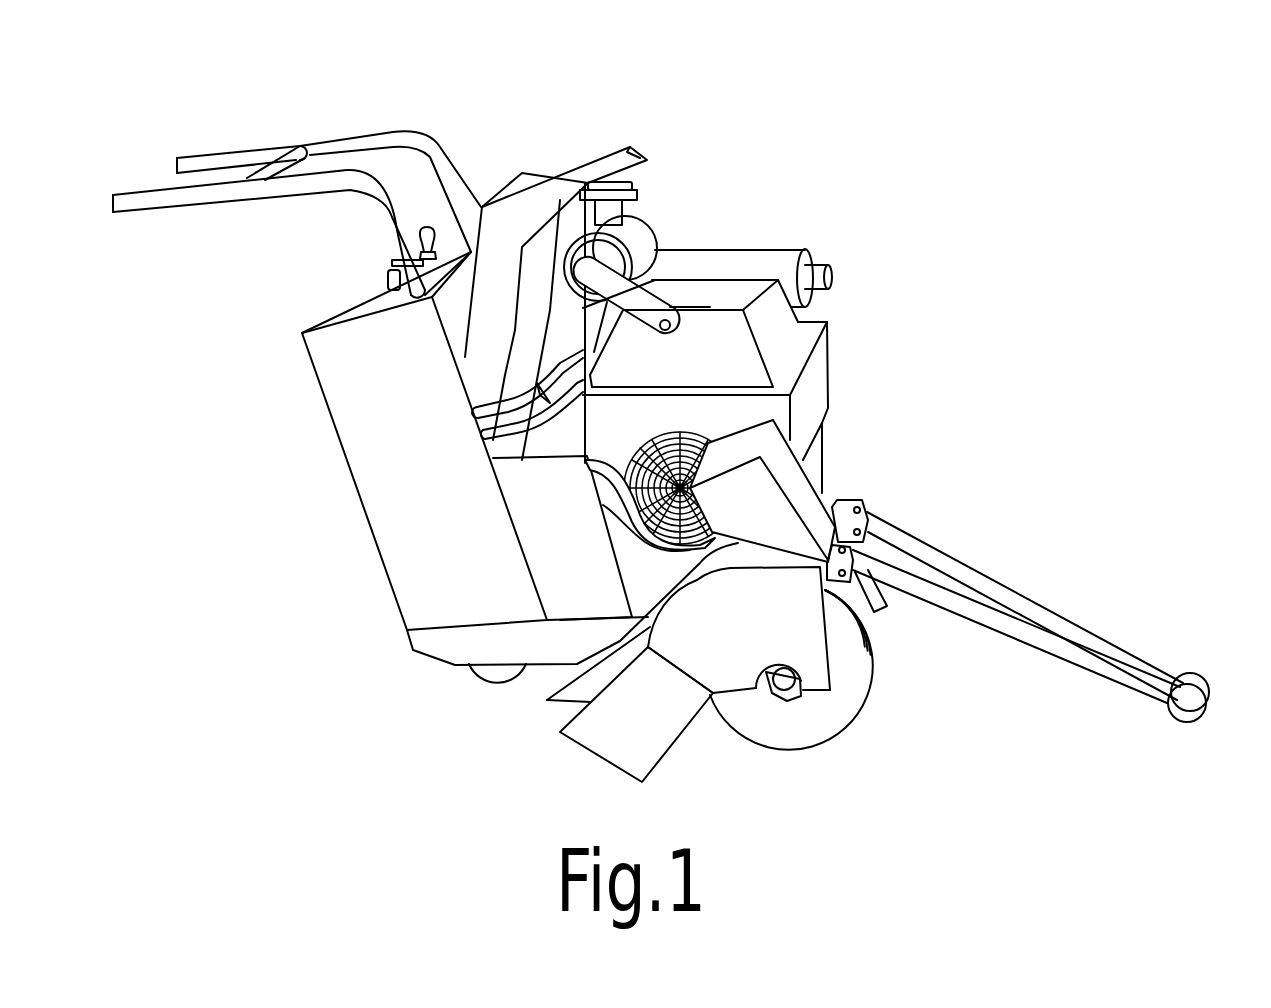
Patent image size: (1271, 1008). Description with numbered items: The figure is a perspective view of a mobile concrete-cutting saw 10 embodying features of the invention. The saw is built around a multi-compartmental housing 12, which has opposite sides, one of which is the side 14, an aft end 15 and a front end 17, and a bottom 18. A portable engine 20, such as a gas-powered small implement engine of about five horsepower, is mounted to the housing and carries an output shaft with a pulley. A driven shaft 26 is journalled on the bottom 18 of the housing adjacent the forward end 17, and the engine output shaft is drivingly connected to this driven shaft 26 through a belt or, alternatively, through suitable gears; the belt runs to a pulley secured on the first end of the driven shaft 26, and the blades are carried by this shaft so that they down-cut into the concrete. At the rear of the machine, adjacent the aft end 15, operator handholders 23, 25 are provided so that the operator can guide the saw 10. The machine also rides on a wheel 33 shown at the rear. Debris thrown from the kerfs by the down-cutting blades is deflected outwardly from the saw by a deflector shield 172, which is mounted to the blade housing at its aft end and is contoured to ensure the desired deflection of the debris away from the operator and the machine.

The mobile saw 10 is at (752, 222).
The multi-compartmental housing 12 is at (843, 353).
The side of housing 14 is at (585, 563).
The aft end of housing 15 is at (345, 453).
The front end of housing 17 is at (823, 462).
The bottom of housing 18 is at (537, 668).
The portable engine 20 is at (813, 398).
The operator handholder 23 is at (160, 207).
The operator handholder 25 is at (219, 161).
The driven shaft 26 is at (787, 678).
The rear guide wheel 33 is at (848, 735).
The deflector shield 172 is at (572, 688).